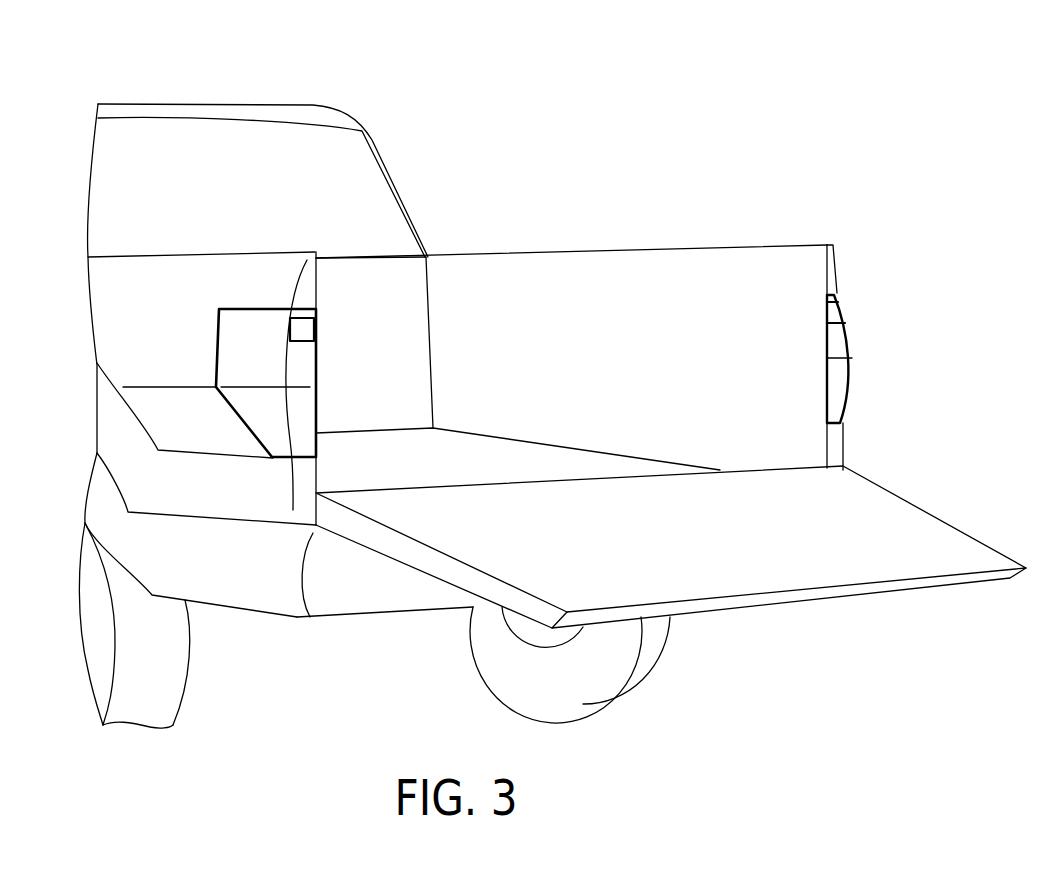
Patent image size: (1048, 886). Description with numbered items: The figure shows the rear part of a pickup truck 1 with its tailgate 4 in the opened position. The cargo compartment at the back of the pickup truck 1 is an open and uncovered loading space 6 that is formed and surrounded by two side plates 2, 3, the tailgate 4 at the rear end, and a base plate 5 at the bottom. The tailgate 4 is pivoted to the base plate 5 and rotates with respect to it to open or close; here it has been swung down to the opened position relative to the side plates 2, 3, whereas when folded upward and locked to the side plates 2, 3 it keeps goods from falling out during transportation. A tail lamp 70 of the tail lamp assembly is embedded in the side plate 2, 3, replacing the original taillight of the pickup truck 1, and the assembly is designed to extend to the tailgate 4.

The pickup truck 1 is at (619, 80).
The side plate 2 is at (130, 338).
The side plate 3 is at (667, 273).
The tailgate 4 is at (772, 545).
The base plate 5 is at (486, 452).
The loading space 6 is at (393, 367).
The tail lamp 70 is at (236, 445).